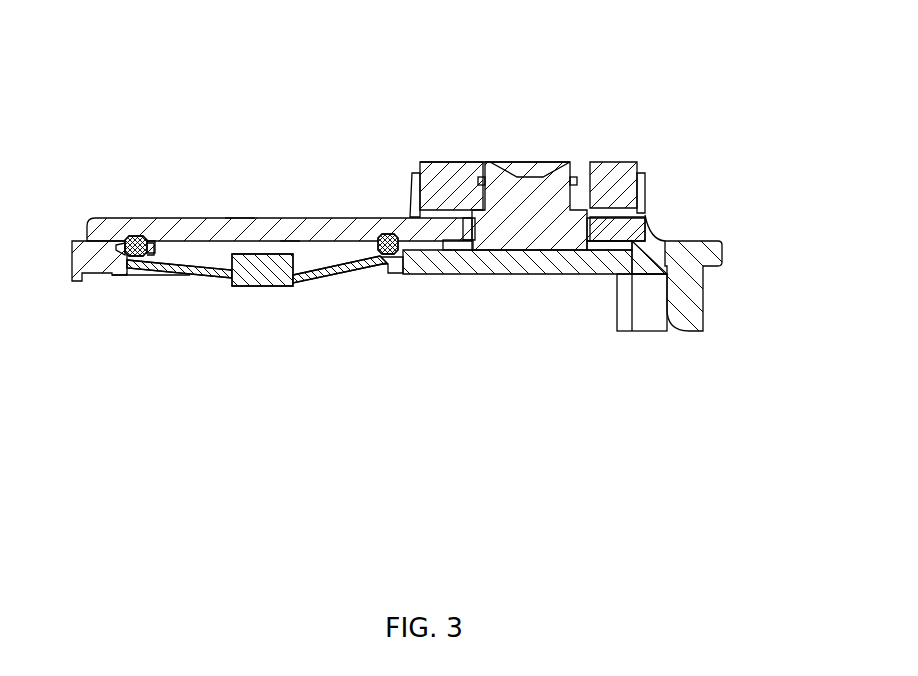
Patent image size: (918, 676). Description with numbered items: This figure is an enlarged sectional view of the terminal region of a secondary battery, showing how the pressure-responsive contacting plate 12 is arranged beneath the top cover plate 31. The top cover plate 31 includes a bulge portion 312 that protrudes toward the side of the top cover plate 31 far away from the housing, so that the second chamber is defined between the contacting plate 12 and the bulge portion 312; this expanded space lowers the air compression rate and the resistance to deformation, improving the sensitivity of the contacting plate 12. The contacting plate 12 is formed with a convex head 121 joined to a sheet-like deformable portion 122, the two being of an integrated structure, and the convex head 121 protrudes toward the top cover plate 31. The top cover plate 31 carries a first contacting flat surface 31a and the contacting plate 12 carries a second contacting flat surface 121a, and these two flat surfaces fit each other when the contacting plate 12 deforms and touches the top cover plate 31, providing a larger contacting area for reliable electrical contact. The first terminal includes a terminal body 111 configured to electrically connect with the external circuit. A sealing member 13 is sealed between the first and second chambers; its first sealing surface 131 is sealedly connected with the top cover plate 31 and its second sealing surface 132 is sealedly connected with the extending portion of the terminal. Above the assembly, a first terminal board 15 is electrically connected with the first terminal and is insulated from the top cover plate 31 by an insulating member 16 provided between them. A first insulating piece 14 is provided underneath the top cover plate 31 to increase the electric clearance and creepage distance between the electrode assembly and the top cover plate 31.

The contacting plate 12 is at (241, 402).
The sealing member 13 is at (132, 218).
The first insulating piece 14 is at (690, 318).
The first terminal board 15 is at (455, 168).
The insulating member 16 is at (645, 187).
The top cover plate 31 is at (695, 251).
The first contacting flat surface 31a is at (240, 217).
The terminal body 111 is at (503, 250).
The convex head 121 is at (250, 287).
The second contacting flat surface 121a is at (287, 290).
The deformable portion 122 is at (188, 275).
The first sealing surface 131 is at (390, 240).
The second sealing surface 132 is at (382, 277).
The bulge portion 312 is at (290, 227).